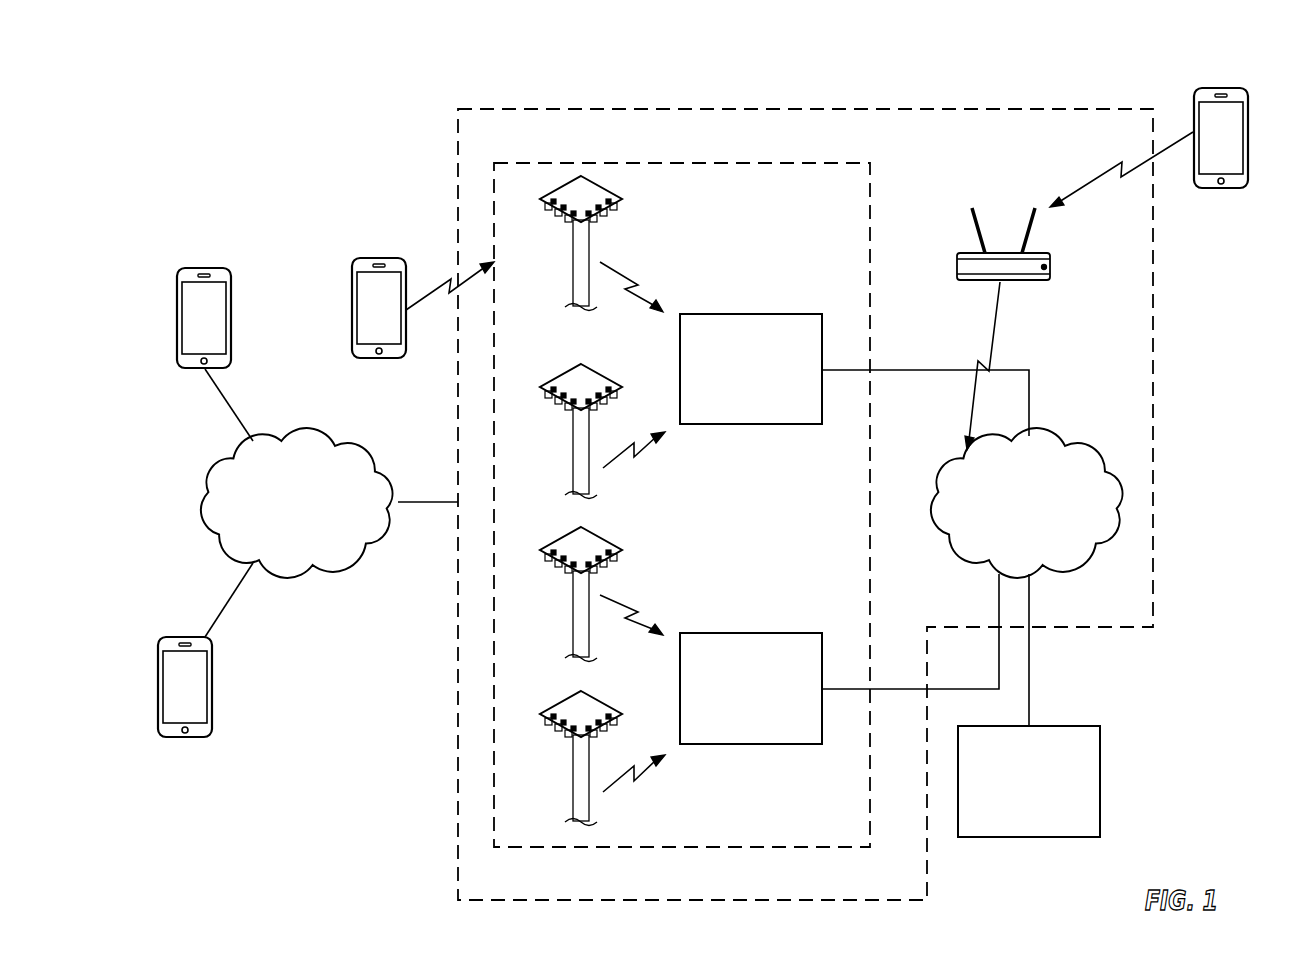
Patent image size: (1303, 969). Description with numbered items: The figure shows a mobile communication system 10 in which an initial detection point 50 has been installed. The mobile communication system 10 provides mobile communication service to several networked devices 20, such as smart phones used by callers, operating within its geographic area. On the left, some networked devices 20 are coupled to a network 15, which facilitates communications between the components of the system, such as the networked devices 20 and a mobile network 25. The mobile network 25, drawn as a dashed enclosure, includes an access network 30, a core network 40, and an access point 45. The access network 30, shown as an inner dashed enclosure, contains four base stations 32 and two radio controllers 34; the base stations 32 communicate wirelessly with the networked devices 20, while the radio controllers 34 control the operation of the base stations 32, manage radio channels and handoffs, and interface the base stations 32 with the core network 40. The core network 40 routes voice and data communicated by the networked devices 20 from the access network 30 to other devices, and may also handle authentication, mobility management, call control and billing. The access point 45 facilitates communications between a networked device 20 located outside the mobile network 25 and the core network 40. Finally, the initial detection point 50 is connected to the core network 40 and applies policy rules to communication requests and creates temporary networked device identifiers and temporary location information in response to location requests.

The mobile communication system 10 is at (384, 96).
The network 15 is at (303, 430).
The networked device 20 is at (177, 310).
The mobile network 25 is at (1020, 108).
The access network 30 is at (822, 163).
The base station 32 is at (573, 261).
The radio controller 34 is at (752, 314).
The core network 40 is at (1073, 440).
The access point 45 is at (1052, 267).
The initial detection point 50 is at (1078, 726).